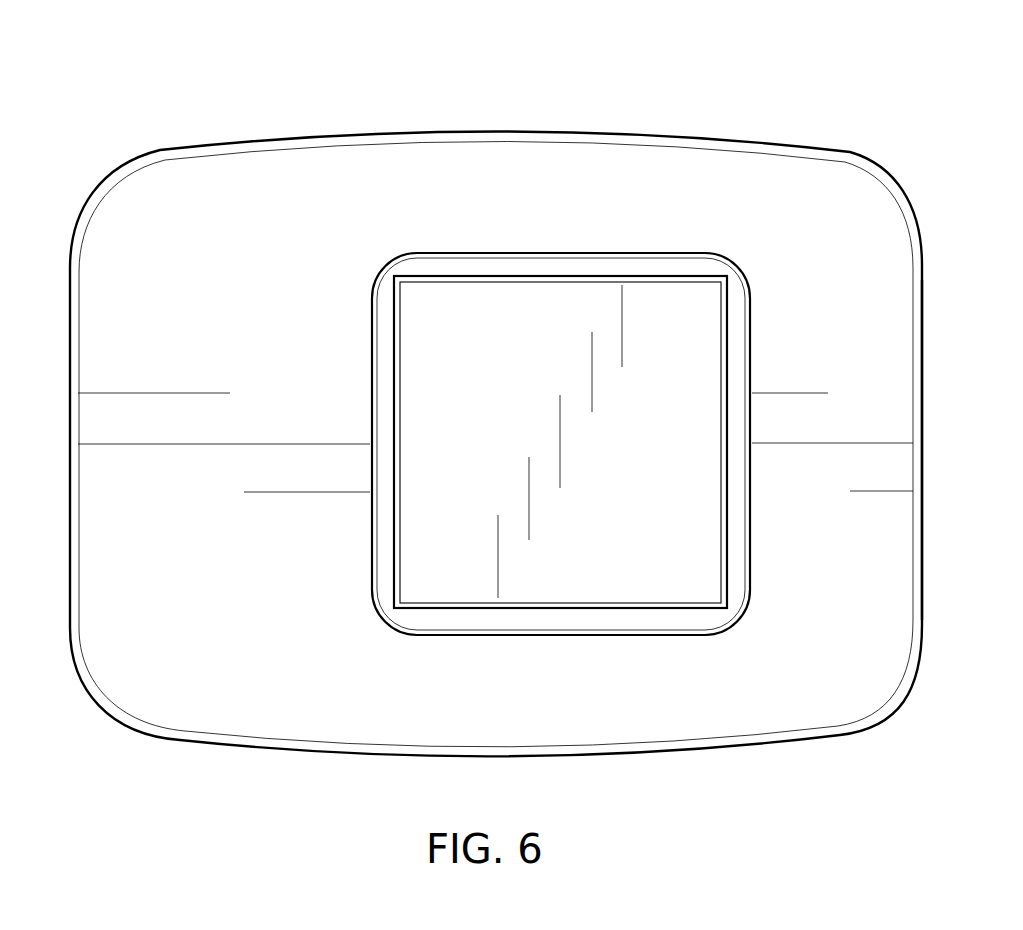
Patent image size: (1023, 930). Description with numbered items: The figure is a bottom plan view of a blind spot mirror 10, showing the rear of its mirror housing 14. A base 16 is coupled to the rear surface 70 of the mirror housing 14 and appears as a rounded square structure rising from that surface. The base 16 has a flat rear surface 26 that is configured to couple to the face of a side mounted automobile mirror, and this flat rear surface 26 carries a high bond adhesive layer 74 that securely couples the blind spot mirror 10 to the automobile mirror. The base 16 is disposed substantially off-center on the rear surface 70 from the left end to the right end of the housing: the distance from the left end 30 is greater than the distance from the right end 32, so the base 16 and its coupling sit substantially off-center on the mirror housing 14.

The blind spot mirror 10 is at (936, 137).
The mirror housing 14 is at (903, 403).
The base 16 is at (388, 403).
The flat rear surface 26 is at (512, 282).
The distance from a left end 30 is at (78, 330).
The distance from a right end 32 is at (899, 337).
The rear surface 70 is at (290, 683).
The high bond adhesive layer 74 is at (503, 436).